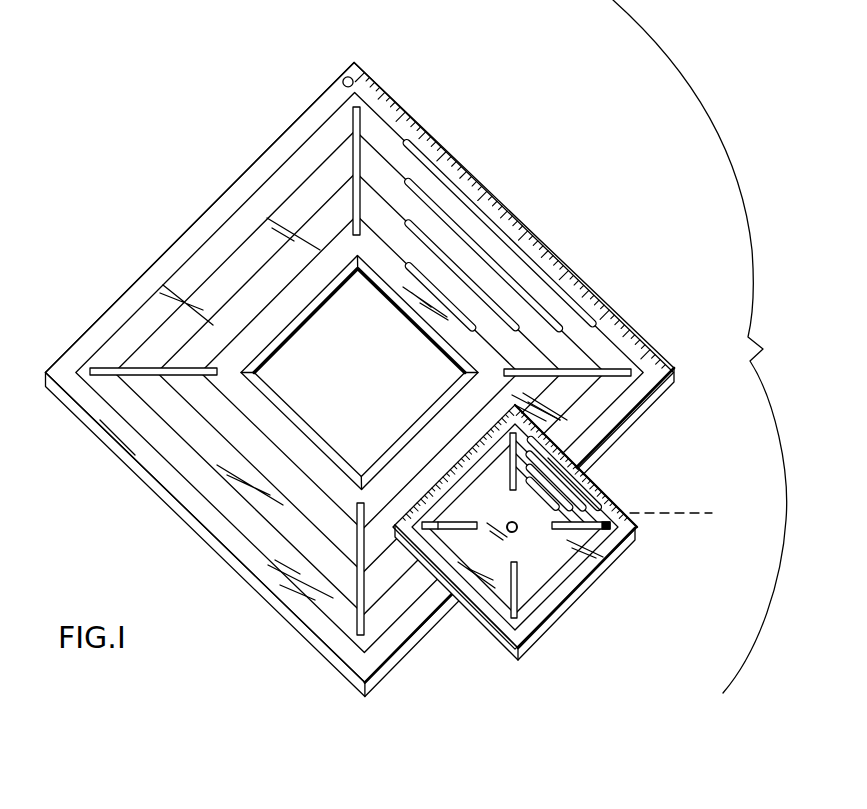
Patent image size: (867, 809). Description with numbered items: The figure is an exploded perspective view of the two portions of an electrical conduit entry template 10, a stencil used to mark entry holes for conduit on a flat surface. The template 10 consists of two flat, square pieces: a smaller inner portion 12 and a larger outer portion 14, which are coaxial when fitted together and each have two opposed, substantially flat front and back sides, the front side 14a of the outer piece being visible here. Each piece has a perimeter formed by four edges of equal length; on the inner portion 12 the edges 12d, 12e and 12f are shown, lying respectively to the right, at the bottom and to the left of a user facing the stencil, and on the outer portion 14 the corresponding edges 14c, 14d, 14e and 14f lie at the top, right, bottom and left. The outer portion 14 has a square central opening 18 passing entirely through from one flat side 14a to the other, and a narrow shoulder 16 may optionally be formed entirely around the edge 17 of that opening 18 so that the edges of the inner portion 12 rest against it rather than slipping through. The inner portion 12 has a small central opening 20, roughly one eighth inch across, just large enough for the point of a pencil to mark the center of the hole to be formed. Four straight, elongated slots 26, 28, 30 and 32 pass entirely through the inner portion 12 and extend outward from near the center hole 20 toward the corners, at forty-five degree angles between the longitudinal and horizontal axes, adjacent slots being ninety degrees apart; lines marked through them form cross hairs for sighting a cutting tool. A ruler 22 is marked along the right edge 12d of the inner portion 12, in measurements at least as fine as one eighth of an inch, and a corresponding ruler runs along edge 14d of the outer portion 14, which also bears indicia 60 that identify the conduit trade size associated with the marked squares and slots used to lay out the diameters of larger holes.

The electrical conduit entry template 10 is at (476, 665).
The inner portion 12 is at (548, 528).
The right edge of inner portion 12d is at (596, 480).
The bottom edge of inner portion 12e is at (624, 556).
The left edge of inner portion 12f is at (465, 607).
The outer portion 14 is at (353, 380).
The front flat side of outer portion 14a is at (210, 414).
The top edge of outer portion 14c is at (265, 152).
The right edge of outer portion 14d is at (541, 238).
The bottom edge of outer portion 14e is at (660, 399).
The left edge of outer portion 14f is at (257, 590).
The shoulder 16 is at (406, 316).
The edge of central opening 17 is at (322, 293).
The central opening 18 is at (325, 437).
The central opening of inner portion 20 is at (608, 498).
The ruler 22 is at (685, 512).
The elongated slot 26 is at (505, 440).
The elongated slot 28 is at (636, 528).
The elongated slot 30 is at (518, 613).
The elongated slot 32 is at (433, 517).
The indicia 60 is at (194, 217).